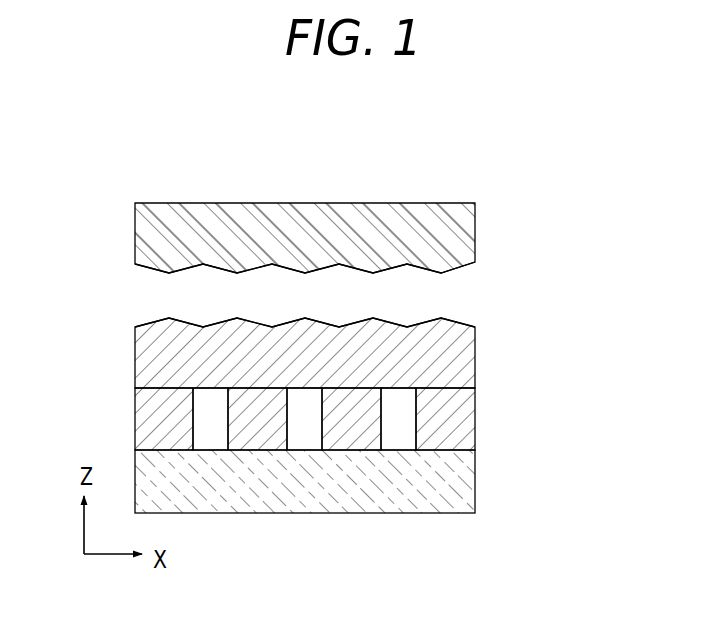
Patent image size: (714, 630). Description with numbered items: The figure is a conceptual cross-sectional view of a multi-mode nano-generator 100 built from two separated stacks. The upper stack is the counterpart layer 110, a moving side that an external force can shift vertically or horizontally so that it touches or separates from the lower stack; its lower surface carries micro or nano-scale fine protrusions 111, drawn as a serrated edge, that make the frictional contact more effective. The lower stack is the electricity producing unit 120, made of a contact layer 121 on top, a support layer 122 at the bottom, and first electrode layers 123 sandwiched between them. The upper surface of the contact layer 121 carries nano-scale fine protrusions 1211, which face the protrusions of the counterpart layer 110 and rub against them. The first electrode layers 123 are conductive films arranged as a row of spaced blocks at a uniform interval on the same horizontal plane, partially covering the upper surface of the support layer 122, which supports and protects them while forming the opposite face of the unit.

The nano-generator 100 is at (122, 161).
The counterpart layer 110 is at (475, 227).
The fine protrusions 111 is at (460, 265).
The electricity producing unit 120 is at (300, 406).
The contact layer 121 is at (468, 355).
The fine protrusions 1211 is at (148, 322).
The first electrode layer 123 is at (468, 417).
The support layer 122 is at (468, 485).